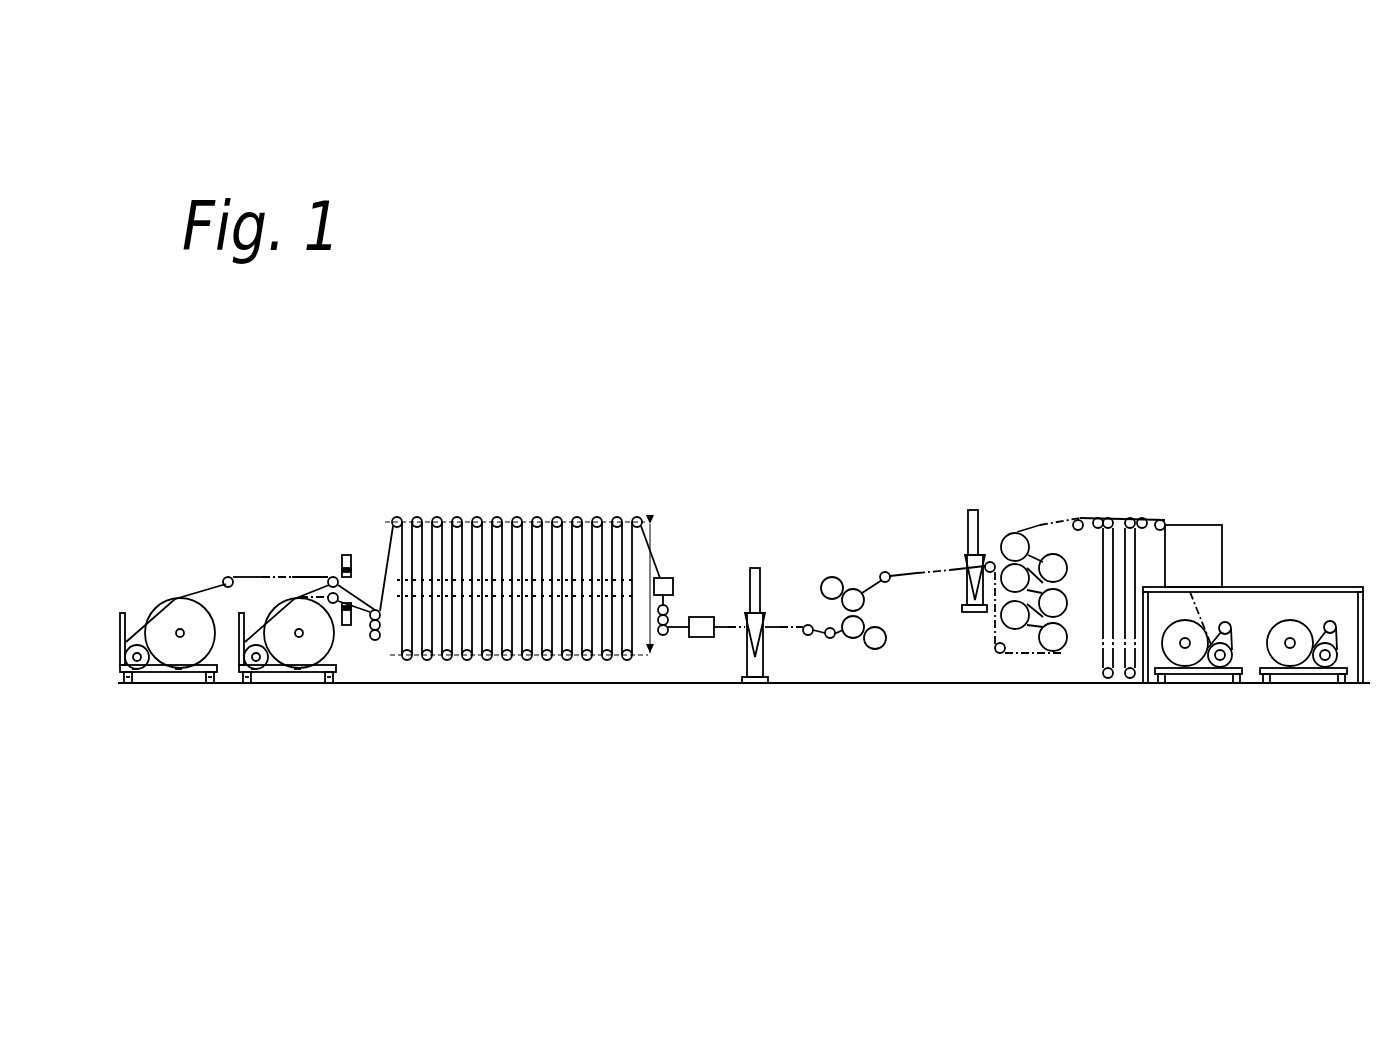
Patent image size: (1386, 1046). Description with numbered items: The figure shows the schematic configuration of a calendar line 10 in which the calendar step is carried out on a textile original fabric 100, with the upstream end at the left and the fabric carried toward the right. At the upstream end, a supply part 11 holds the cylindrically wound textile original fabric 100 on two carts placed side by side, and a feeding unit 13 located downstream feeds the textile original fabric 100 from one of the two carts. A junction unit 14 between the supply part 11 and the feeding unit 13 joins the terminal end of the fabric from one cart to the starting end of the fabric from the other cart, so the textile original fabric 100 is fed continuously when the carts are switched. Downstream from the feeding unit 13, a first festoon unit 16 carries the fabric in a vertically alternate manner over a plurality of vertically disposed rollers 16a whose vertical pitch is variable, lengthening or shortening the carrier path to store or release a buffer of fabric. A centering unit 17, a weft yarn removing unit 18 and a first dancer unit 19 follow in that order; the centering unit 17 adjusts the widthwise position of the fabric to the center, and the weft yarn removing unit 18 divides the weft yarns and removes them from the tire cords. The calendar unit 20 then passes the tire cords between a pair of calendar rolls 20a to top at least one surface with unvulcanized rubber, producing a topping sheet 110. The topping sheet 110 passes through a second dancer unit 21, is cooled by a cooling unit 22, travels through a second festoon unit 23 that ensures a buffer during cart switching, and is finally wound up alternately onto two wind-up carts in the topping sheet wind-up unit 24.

The calendar line 10 is at (563, 395).
The supply part 11 is at (240, 565).
The feeding unit 13 is at (373, 660).
The junction unit 14 is at (345, 552).
The first festoon unit 16 is at (545, 500).
The rollers 16a is at (419, 519).
The centering unit 17 is at (672, 576).
The weft yarn removing unit 18 is at (700, 640).
The first dancer unit 19 is at (765, 610).
The calendar unit 20 is at (830, 562).
The calendar rolls 20a is at (853, 590).
The second dancer unit 21 is at (960, 555).
The cooling unit 22 is at (1023, 660).
The second festoon unit 23 is at (1130, 508).
The topping sheet wind-up unit 24 is at (1204, 527).
The textile original fabric 100 is at (385, 575).
The topping sheet 110 is at (1045, 523).